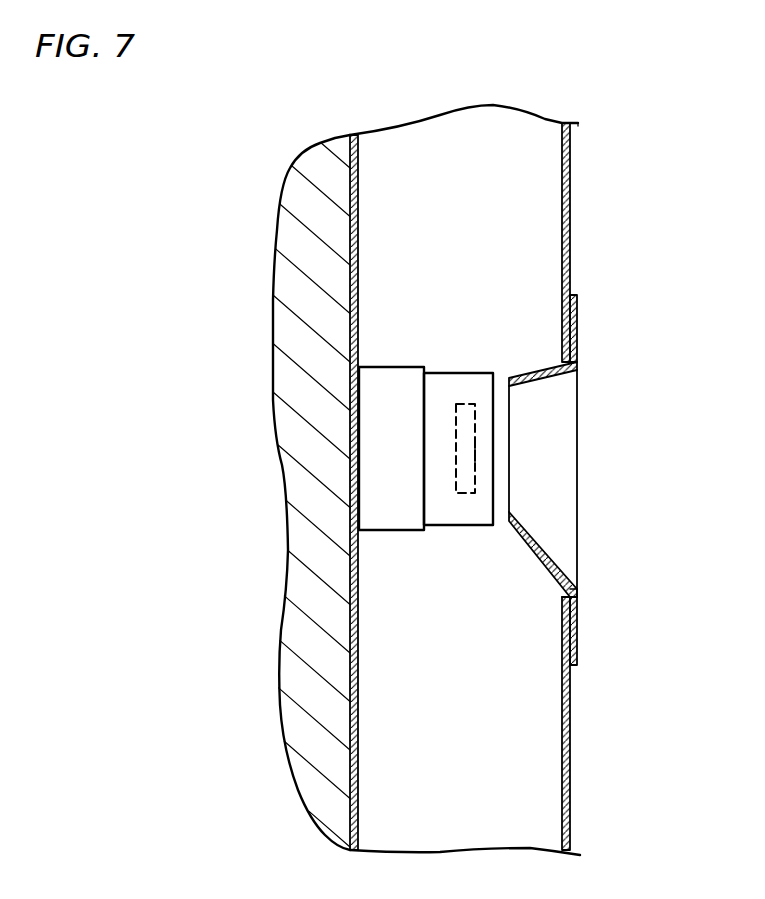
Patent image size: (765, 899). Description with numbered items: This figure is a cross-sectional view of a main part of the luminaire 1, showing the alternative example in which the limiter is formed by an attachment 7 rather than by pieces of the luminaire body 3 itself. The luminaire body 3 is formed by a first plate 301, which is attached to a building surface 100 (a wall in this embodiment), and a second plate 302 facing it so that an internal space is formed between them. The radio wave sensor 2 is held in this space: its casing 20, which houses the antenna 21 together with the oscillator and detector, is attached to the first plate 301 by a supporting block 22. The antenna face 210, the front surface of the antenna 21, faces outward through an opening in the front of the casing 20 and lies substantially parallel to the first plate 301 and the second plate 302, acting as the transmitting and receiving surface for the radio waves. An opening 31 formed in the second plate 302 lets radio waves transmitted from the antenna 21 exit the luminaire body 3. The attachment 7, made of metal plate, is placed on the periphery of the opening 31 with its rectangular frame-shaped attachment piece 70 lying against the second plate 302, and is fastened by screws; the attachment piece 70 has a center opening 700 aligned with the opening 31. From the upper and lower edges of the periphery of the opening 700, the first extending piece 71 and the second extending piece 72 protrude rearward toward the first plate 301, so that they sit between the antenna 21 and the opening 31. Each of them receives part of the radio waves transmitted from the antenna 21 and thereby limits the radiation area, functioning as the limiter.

The luminaire 1 is at (664, 200).
The radio wave sensor 2 is at (458, 421).
The luminaire body 3 is at (573, 140).
The attachment 7 is at (535, 461).
The casing 20 is at (432, 380).
The antenna 21 is at (455, 483).
The supporting block 22 is at (379, 376).
The opening 31 is at (561, 598).
The attachment piece 70 is at (580, 327).
The first extending piece 71 is at (533, 370).
The second extending piece 72 is at (530, 551).
The building surface 100 is at (300, 776).
The antenna face 210 is at (476, 470).
The first plate 301 is at (358, 217).
The second plate 302 is at (572, 773).
The center opening 700 is at (577, 589).